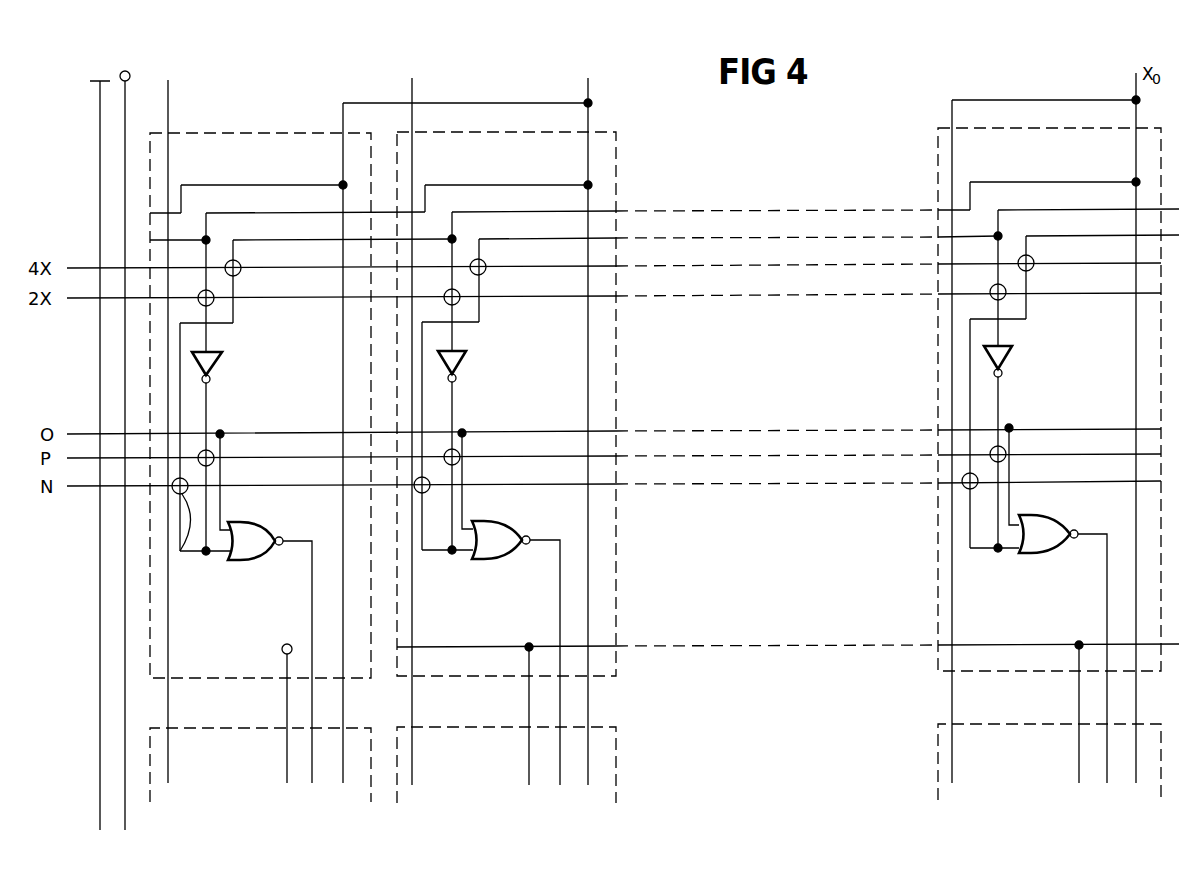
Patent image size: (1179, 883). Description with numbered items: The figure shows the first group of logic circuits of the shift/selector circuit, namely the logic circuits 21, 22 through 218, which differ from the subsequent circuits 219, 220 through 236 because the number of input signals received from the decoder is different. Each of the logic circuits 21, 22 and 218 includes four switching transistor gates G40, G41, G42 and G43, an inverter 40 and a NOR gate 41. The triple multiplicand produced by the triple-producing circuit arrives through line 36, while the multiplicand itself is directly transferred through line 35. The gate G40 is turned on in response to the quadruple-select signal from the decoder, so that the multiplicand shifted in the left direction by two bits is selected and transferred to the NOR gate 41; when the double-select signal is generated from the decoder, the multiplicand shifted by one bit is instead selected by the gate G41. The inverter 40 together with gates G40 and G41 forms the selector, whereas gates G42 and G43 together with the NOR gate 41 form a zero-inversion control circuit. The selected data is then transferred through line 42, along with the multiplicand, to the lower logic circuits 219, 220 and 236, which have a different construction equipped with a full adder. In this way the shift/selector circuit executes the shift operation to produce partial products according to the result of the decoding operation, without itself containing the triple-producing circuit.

The logic circuit 21 is at (236, 133).
The logic circuit 22 is at (616, 152).
The logic circuit 218 is at (938, 150).
The logic circuit 219 is at (186, 728).
The logic circuit 220 is at (445, 727).
The logic circuit 236 is at (975, 724).
The line 35 is at (343, 778).
The line 36 is at (178, 88).
The inverter 40 is at (218, 364).
The NOR gate 41 is at (264, 560).
The line 42 is at (312, 780).
The switching transistor gate G40 is at (247, 253).
The switching transistor gate G41 is at (198, 291).
The switching transistor gate G42 is at (213, 464).
The switching transistor gate G43 is at (180, 555).